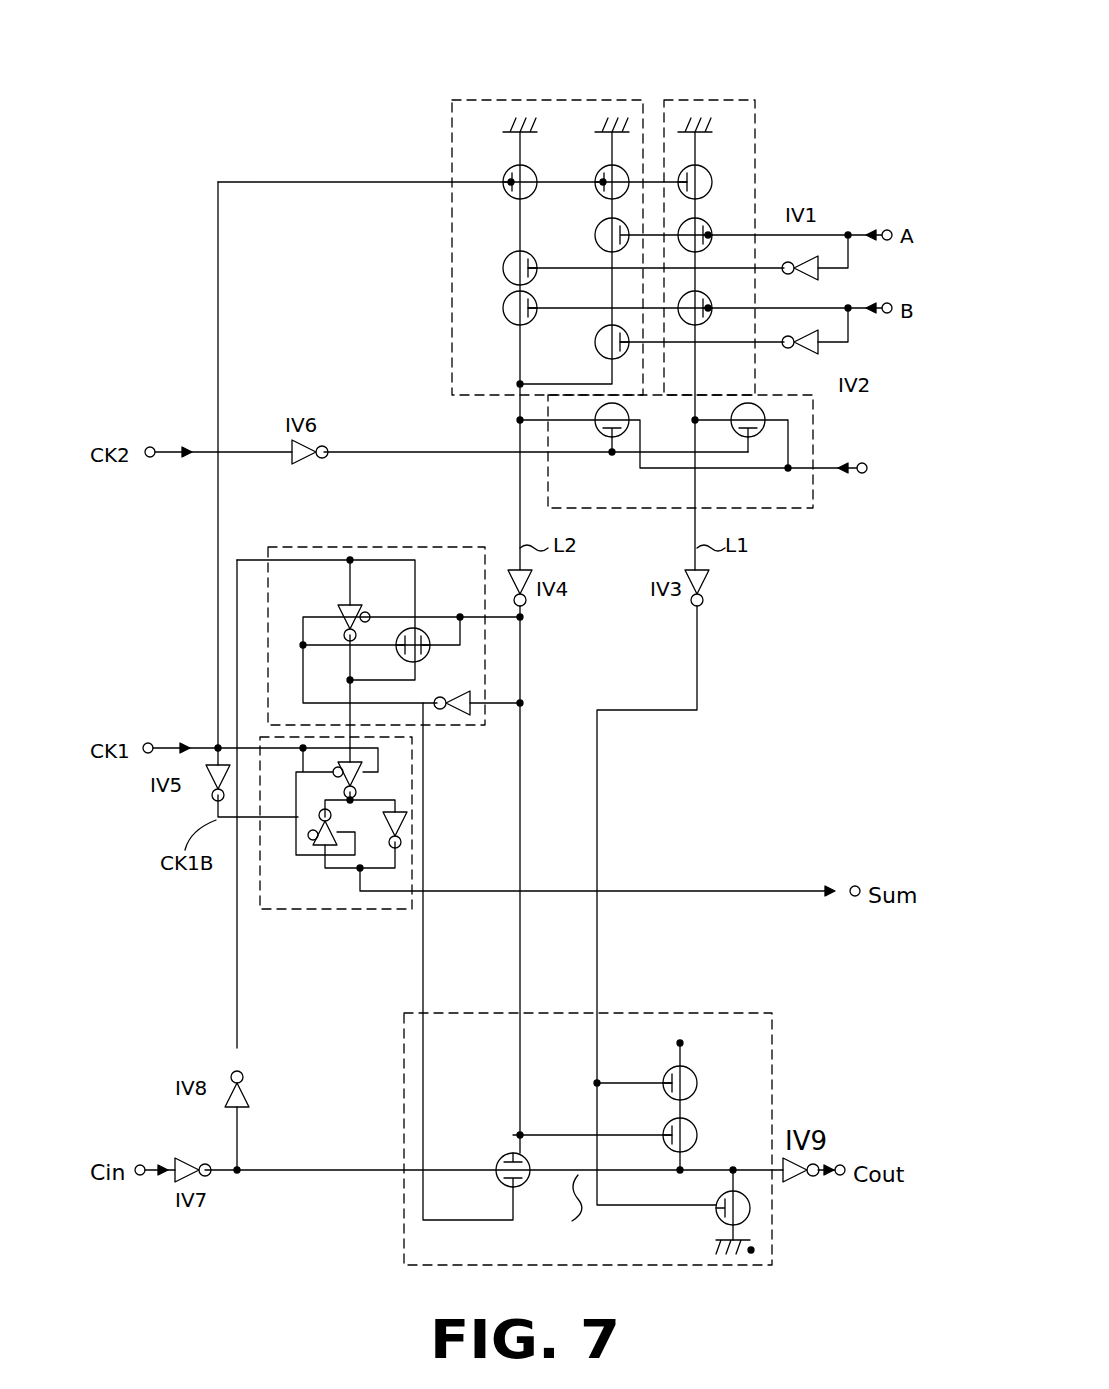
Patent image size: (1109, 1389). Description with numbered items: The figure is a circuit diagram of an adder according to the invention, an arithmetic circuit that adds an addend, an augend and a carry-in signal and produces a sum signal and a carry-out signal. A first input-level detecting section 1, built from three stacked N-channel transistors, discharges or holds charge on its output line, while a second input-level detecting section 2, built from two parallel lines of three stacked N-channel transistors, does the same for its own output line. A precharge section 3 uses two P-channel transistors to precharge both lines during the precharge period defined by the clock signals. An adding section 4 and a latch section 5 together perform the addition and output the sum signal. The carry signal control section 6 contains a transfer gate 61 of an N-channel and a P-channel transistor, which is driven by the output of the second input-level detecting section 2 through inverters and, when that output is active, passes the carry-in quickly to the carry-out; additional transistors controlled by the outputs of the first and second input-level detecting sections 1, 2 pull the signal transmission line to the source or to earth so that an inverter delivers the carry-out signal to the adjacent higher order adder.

The first input-level detecting section 1 is at (688, 100).
The second input-level detecting section 2 is at (452, 140).
The precharge section 3 is at (757, 510).
The adding section 4 is at (318, 550).
The latch section 5 is at (305, 910).
The carry signal control section 6 is at (679, 1003).
The transfer gate 61 is at (513, 1222).